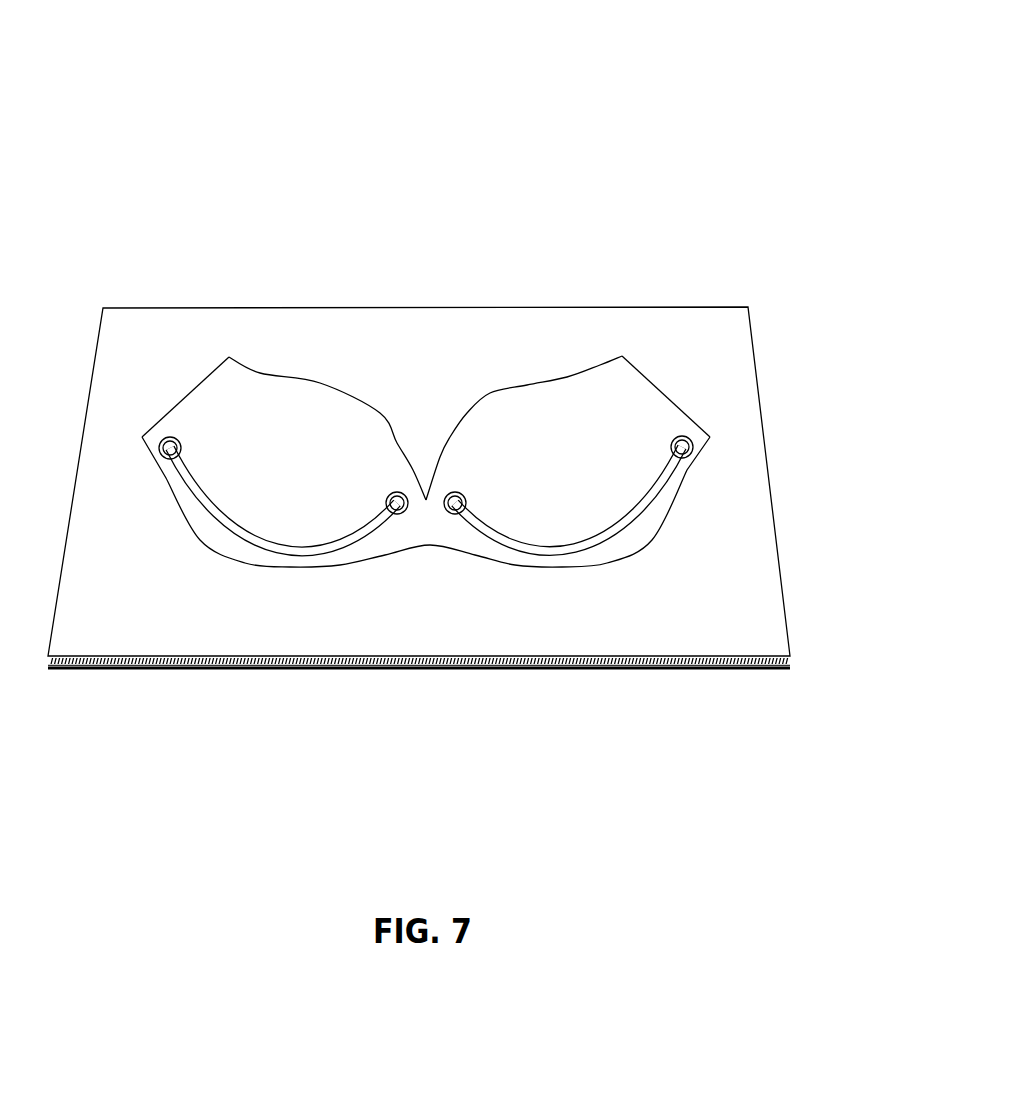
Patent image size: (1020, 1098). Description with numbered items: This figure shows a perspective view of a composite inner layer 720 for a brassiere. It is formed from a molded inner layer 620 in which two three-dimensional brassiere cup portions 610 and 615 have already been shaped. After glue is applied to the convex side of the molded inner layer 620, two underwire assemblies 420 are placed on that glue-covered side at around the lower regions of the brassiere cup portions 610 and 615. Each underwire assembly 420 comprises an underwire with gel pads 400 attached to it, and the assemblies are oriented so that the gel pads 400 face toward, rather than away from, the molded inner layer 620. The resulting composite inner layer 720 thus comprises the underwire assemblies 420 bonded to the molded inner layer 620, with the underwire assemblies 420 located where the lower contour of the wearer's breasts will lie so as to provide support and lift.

The composite inner layer 720 is at (590, 130).
The molded inner layer 620 is at (750, 330).
The brassiere cup portion 610 is at (263, 408).
The brassiere cup portion 615 is at (534, 430).
The underwire assembly 420 is at (294, 548).
The gel pad 400 is at (165, 460).